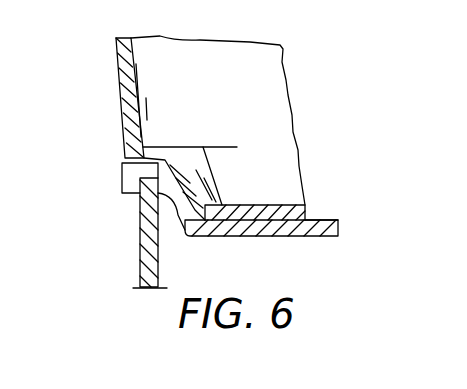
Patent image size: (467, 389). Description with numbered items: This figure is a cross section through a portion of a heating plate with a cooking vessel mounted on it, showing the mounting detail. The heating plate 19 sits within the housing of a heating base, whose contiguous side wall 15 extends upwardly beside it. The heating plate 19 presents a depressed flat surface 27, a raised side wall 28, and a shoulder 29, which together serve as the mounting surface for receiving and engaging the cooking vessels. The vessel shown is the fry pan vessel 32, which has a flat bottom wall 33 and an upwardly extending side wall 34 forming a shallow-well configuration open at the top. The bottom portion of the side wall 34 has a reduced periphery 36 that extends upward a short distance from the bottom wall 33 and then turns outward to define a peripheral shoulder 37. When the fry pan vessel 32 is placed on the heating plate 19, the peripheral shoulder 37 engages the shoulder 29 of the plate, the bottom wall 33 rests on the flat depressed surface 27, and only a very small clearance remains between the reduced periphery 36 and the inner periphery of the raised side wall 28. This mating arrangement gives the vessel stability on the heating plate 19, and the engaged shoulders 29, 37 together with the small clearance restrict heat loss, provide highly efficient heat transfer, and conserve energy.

The side wall 15 is at (159, 282).
The heating plate 19 is at (325, 214).
The flat depressed surface 27 is at (296, 236).
The raised side wall 28 is at (148, 214).
The shoulder 29 is at (124, 172).
The fry pan vessel 32 is at (114, 43).
The bottom wall 33 is at (303, 207).
The side wall 34 is at (118, 98).
The reduced periphery 36 is at (220, 182).
The peripheral shoulder 37 is at (167, 147).